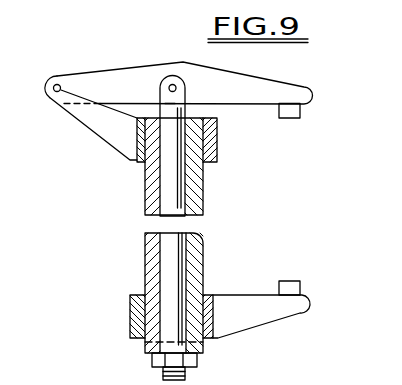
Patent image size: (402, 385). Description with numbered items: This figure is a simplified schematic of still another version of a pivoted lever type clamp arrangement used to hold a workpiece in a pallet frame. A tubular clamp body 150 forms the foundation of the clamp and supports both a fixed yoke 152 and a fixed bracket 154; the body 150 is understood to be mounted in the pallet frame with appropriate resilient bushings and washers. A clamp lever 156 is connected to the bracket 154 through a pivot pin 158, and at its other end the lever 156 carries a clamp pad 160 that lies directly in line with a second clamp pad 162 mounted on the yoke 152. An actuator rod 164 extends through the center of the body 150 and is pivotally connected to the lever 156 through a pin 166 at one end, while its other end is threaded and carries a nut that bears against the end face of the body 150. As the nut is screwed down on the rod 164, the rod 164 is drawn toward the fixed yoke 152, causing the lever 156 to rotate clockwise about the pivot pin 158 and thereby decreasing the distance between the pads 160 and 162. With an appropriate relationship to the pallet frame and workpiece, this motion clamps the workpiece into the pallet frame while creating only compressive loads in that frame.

The tubular clamp body 150 is at (192, 262).
The fixed yoke 152 is at (250, 320).
The fixed bracket 154 is at (112, 138).
The clamp lever 156 is at (184, 65).
The pivot pin 158 is at (54, 93).
The clamp pad 160 is at (300, 113).
The clamp pad 162 is at (292, 280).
The actuator rod 164 is at (170, 197).
The pin 166 is at (178, 84).